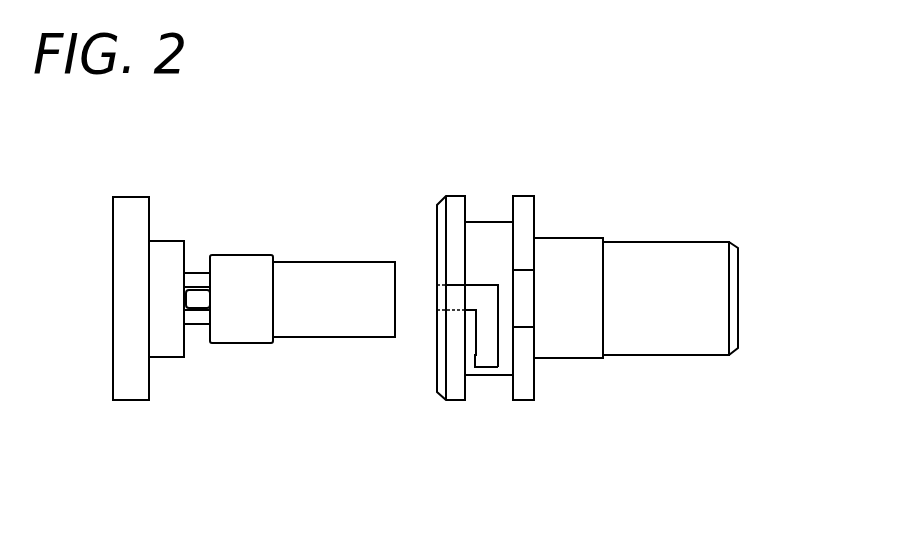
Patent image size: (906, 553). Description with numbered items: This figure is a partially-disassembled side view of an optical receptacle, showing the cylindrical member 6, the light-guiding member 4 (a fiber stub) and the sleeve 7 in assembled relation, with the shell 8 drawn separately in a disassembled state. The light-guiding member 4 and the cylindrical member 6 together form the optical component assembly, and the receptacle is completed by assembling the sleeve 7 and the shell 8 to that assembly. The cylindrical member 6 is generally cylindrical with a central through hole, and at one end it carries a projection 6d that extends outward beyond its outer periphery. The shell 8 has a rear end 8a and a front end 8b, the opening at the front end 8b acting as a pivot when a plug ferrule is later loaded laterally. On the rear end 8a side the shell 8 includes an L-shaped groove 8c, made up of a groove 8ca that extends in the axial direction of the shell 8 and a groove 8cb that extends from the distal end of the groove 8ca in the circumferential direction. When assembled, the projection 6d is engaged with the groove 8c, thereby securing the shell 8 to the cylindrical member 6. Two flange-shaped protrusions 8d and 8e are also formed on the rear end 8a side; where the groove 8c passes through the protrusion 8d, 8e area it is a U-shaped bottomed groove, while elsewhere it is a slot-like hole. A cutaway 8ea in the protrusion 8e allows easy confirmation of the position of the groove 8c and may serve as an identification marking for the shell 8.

The light-guiding member 4 is at (195, 317).
The cylindrical member 6 is at (133, 373).
The projection 6d is at (197, 298).
The sleeve 7 is at (325, 320).
The shell 8 is at (678, 322).
The rear end 8a is at (435, 260).
The front end 8b is at (738, 272).
The L-shaped groove 8c is at (485, 298).
The groove 8ca is at (458, 298).
The groove 8cb is at (487, 340).
The flange-shaped protrusion 8d is at (452, 383).
The flange-shaped protrusion 8e is at (528, 380).
The cutaway 8ea is at (523, 297).